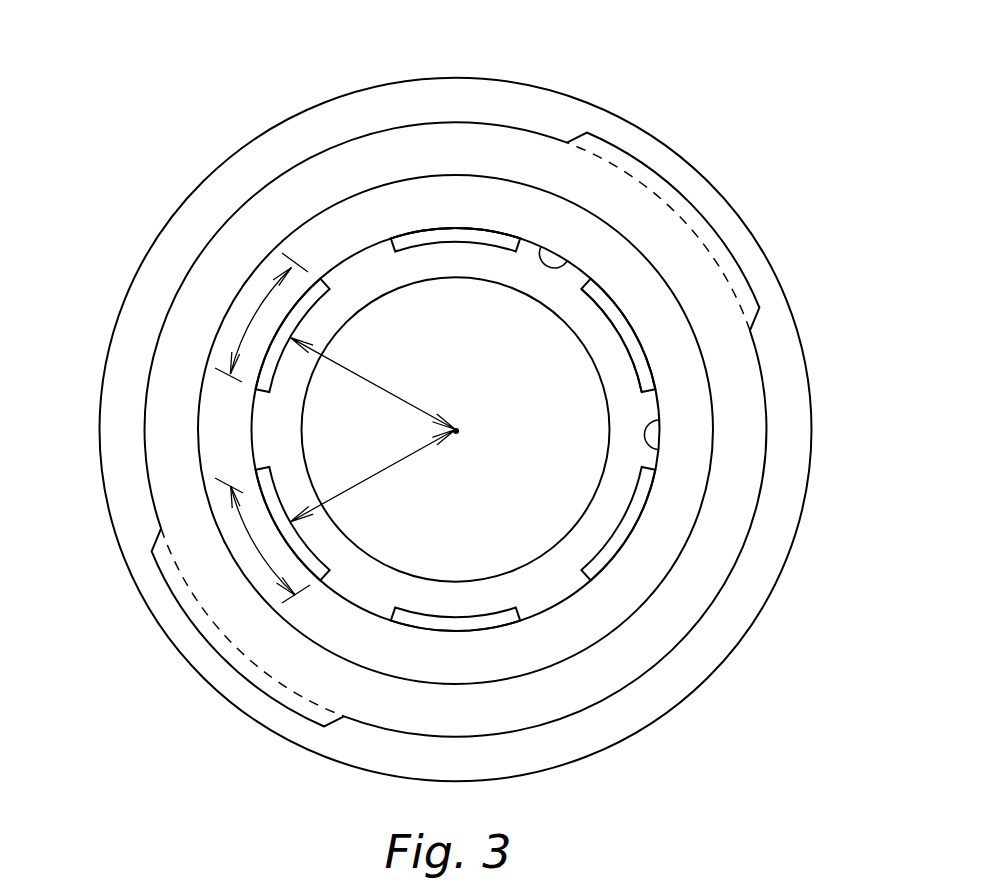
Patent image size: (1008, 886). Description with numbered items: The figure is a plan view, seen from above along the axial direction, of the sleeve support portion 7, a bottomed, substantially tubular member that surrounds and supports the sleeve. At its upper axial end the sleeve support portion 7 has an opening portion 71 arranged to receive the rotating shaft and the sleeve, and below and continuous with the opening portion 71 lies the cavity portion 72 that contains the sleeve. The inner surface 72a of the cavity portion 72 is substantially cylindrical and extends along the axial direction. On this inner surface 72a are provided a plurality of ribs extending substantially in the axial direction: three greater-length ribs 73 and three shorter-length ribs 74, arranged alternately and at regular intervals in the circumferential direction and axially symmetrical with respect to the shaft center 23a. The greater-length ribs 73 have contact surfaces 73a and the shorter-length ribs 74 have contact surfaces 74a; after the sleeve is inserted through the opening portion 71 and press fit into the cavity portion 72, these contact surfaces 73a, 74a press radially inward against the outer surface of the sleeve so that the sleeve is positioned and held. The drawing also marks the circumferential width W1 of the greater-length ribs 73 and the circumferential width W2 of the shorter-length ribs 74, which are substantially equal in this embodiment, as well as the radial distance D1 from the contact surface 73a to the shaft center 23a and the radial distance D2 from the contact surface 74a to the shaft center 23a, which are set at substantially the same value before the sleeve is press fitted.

The sleeve support portion 7 is at (136, 37).
The opening portion 71 is at (543, 243).
The cavity portion 72 is at (306, 160).
The inner surface of the cavity portion 72a is at (661, 423).
The greater-length rib 73 is at (437, 233).
The contact surface of the greater-length rib 73a is at (490, 237).
The shorter-length rib 74 is at (300, 321).
The contact surface of the shorter-length rib 74a is at (637, 380).
The shaft center 23a is at (462, 437).
The radial distance D1 is at (397, 472).
The radial distance D2 is at (383, 390).
The circumferential width W1 is at (240, 508).
The circumferential width W2 is at (257, 307).